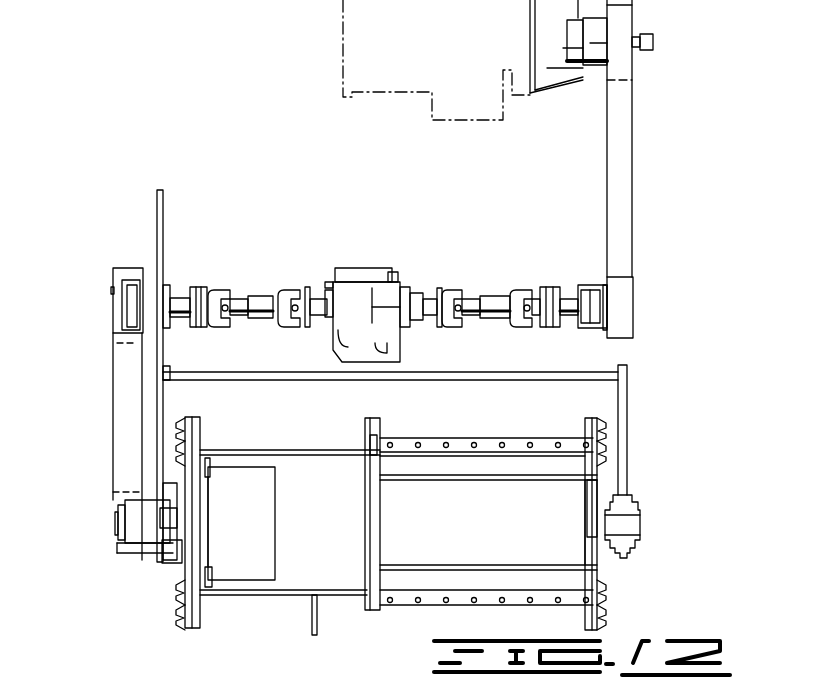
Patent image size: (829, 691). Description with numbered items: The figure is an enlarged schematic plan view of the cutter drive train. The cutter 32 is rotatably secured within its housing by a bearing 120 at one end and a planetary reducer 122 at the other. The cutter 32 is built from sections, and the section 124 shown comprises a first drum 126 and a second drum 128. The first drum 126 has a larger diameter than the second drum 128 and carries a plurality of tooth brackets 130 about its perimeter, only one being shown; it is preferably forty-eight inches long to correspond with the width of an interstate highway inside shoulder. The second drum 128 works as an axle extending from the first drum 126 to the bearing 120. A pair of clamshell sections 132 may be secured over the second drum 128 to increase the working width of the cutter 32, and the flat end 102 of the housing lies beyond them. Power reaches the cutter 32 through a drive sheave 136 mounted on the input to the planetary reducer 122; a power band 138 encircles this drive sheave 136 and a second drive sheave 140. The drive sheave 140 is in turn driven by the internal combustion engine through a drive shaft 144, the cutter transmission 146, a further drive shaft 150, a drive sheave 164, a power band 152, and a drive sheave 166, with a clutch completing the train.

The cutter 32 is at (244, 606).
The flat end 102 is at (626, 400).
The bearing 120 is at (626, 556).
The planetary reducer 122 is at (230, 550).
The section 124 is at (363, 616).
The first drum 126 is at (320, 450).
The second drum 128 is at (438, 510).
The tooth bracket 130 is at (310, 614).
The clamshell sections 132 is at (492, 438).
The drive sheave 136 is at (117, 493).
The power band 138 is at (115, 410).
The drive sheave 140 is at (112, 268).
The drive shaft 144 is at (263, 290).
The cutter transmission 146 is at (346, 268).
The drive shaft 150 is at (483, 295).
The power band 152 is at (606, 138).
The drive sheave 164 is at (634, 320).
The drive sheave 166 is at (633, 22).